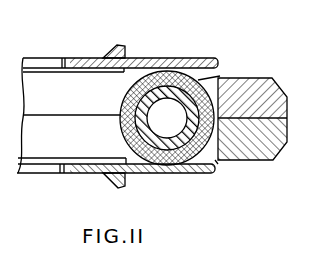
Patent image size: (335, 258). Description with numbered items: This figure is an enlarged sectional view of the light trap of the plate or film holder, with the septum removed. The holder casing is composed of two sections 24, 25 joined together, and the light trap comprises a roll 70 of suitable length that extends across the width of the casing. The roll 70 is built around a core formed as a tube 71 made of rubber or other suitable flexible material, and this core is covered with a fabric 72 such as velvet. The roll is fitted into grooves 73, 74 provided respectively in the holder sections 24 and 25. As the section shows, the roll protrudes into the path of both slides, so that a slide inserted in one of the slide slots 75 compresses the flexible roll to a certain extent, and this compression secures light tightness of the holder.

The holder section 24 is at (80, 58).
The holder section 25 is at (82, 176).
The roll 70 is at (177, 55).
The tube 71 is at (121, 107).
The fabric 72 is at (226, 77).
The groove 73 is at (164, 72).
The groove 74 is at (170, 176).
The slide slot 75 is at (218, 161).